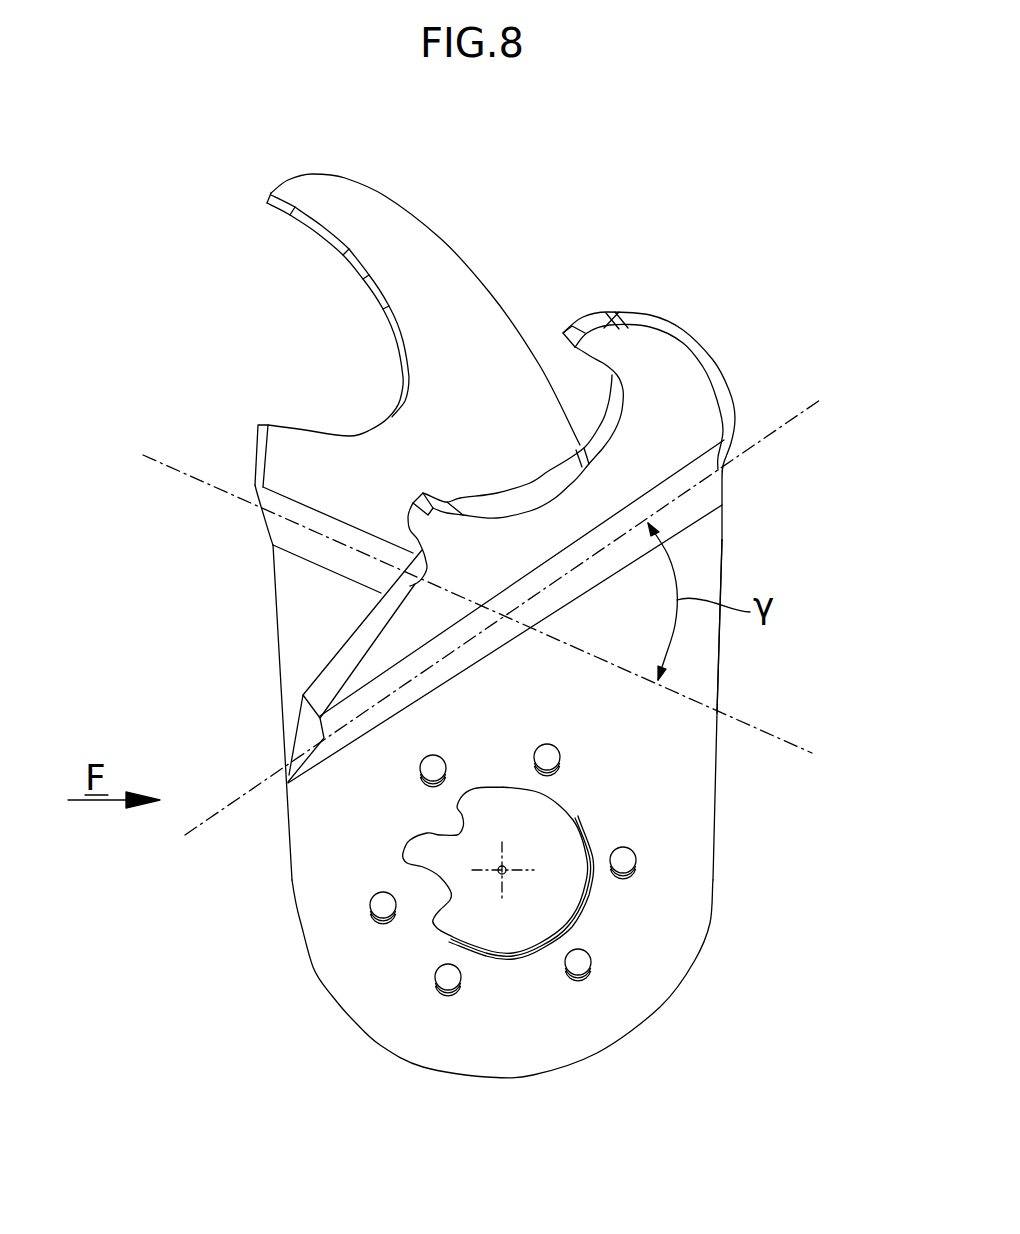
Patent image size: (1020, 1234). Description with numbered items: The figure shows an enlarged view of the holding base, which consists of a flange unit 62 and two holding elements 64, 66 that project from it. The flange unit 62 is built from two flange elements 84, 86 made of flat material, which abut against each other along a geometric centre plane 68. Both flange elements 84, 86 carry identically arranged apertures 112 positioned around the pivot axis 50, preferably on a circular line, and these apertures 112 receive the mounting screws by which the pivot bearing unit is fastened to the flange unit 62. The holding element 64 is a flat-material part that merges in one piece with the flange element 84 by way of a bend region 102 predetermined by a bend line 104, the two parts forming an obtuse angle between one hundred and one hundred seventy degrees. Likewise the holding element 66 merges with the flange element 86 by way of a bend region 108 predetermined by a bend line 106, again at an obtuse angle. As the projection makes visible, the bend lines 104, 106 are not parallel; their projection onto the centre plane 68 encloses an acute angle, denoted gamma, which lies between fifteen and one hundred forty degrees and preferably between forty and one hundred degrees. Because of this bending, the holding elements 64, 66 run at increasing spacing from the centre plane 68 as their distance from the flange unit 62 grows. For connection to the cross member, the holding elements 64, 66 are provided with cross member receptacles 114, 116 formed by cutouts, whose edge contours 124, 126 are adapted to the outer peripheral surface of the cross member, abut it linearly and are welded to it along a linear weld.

The pivot axis 50 is at (507, 877).
The flange unit 62 is at (747, 1000).
The holding element 64 is at (410, 247).
The holding element 66 is at (680, 370).
The geometric centre plane 68 is at (585, 170).
The flange element 84 is at (315, 630).
The flange element 86 is at (700, 545).
The bend region 102 is at (330, 555).
The bend line 104 is at (765, 751).
The bend line 106 is at (710, 450).
The bend region 108 is at (790, 423).
The apertures 112 is at (634, 857).
The cross member receptacle 114 is at (297, 243).
The cross member receptacle 116 is at (587, 424).
The edge contour 124 is at (373, 298).
The edge contour 126 is at (493, 490).